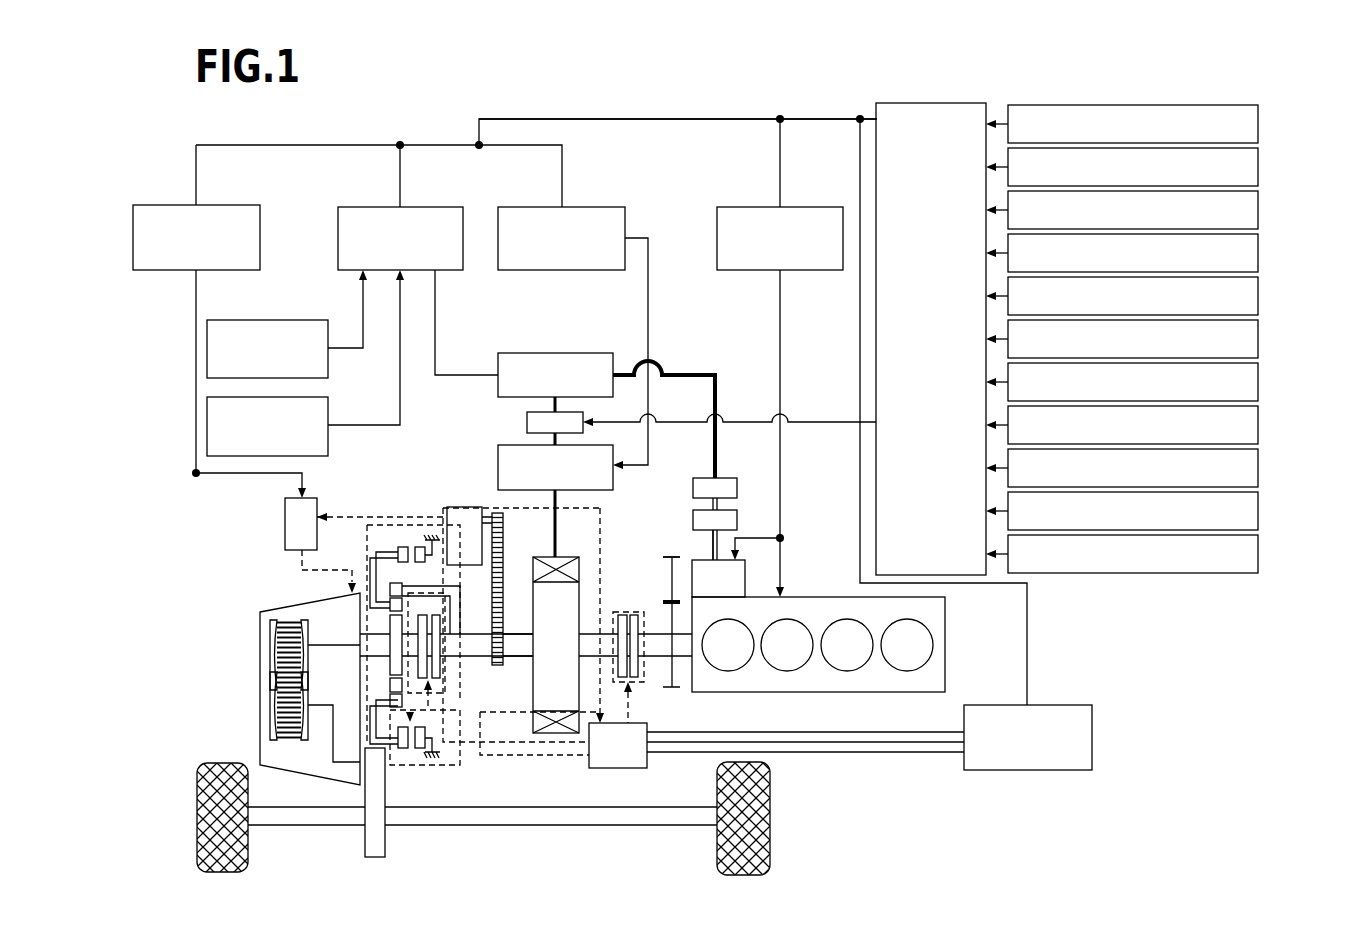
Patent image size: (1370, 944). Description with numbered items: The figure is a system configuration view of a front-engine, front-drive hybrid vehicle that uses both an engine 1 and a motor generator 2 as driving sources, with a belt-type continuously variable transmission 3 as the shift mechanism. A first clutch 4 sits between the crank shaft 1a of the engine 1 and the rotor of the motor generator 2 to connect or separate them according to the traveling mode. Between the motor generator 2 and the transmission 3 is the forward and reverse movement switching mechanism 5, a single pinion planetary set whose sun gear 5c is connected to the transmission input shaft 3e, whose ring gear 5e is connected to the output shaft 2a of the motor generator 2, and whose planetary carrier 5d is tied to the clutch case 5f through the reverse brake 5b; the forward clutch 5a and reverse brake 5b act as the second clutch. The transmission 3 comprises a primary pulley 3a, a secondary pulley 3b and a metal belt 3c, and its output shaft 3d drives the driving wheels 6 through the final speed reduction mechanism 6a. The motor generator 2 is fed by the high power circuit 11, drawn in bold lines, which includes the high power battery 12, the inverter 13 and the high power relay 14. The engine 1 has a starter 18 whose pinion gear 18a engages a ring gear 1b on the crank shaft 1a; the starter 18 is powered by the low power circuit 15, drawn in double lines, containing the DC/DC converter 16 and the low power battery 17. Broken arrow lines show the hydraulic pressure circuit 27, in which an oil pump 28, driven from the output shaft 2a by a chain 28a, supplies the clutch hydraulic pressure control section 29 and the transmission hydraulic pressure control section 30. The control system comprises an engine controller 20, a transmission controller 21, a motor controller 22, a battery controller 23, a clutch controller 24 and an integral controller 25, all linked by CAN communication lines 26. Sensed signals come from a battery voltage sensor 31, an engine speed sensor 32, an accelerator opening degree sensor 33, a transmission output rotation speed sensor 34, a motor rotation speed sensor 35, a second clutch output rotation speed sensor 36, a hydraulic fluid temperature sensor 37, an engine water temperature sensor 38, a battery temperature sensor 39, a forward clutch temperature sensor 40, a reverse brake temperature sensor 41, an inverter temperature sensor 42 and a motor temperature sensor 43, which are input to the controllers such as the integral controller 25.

The engine 1 is at (820, 600).
The crank shaft 1a is at (683, 650).
The ring gear 1b is at (668, 623).
The motor generator 2 is at (560, 700).
The output shaft of the motor generator 2a is at (520, 650).
The belt-type continuously variable transmission 3 is at (240, 690).
The primary pulley 3a is at (270, 630).
The secondary pulley 3b is at (270, 718).
The belt 3c is at (280, 670).
The output shaft of the continuously variable transmission 3d is at (343, 762).
The input shaft of the continuously variable transmission 3e is at (332, 642).
The first clutch 4 is at (644, 680).
The forward and reverse movement switching mechanism 5 is at (447, 765).
The forward clutch 5a is at (432, 680).
The reverse brake 5b is at (410, 750).
The sun gear 5c is at (388, 620).
The planetary carrier 5d is at (392, 604).
The ring gear 5e is at (392, 590).
The clutch case 5f is at (435, 770).
The driving wheels 6 is at (197, 812).
The final speed reduction mechanism 6a is at (385, 845).
The high power circuit 11 is at (687, 375).
The high power battery 12 is at (498, 362).
The inverter 13 is at (498, 455).
The high power relay 14 is at (527, 420).
The low power circuit 15 is at (715, 560).
The DC/DC converter 16 is at (737, 488).
The low power battery 17 is at (737, 520).
The starter 18 is at (712, 590).
The pinion gear 18a is at (668, 570).
The engine controller 20 is at (810, 210).
The transmission controller 21 is at (160, 215).
The motor controller 22 is at (598, 213).
The battery controller 23 is at (350, 218).
The clutch controller 24 is at (1092, 745).
The integral controller 25 is at (930, 103).
The CAN communication lines 26 is at (705, 118).
The hydraulic pressure circuit 27 is at (498, 512).
The oil pump 28 is at (492, 598).
The chain 28a is at (490, 618).
The clutch hydraulic pressure control section 29 is at (617, 757).
The transmission hydraulic pressure control section 30 is at (285, 527).
The battery voltage sensor 31 is at (295, 320).
The engine speed sensor 32 is at (1258, 124).
The accelerator opening degree sensor 33 is at (1258, 167).
The transmission output rotation speed sensor 34 is at (1258, 210).
The motor rotation speed sensor 35 is at (1258, 253).
The second clutch output rotation speed sensor 36 is at (1258, 296).
The hydraulic fluid temperature sensor 37 is at (1258, 339).
The engine water temperature sensor 38 is at (1258, 382).
The battery temperature sensor 39 is at (328, 410).
The forward clutch temperature sensor 40 is at (1258, 425).
The reverse brake temperature sensor 41 is at (1258, 468).
The inverter temperature sensor 42 is at (1258, 511).
The motor temperature sensor 43 is at (1258, 554).